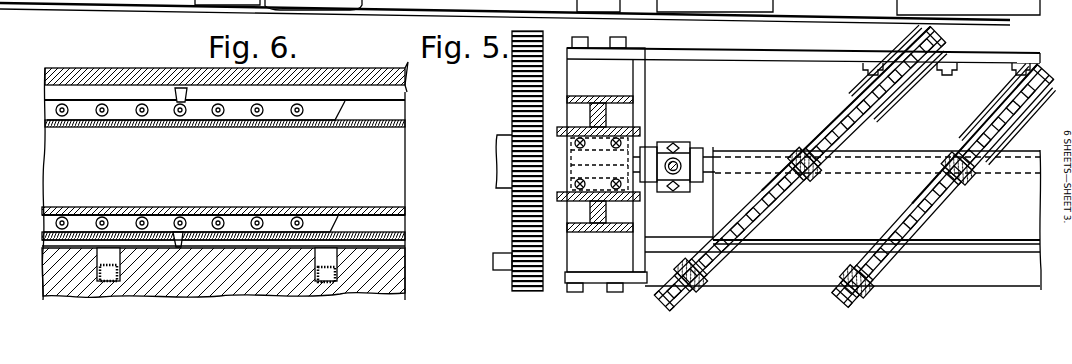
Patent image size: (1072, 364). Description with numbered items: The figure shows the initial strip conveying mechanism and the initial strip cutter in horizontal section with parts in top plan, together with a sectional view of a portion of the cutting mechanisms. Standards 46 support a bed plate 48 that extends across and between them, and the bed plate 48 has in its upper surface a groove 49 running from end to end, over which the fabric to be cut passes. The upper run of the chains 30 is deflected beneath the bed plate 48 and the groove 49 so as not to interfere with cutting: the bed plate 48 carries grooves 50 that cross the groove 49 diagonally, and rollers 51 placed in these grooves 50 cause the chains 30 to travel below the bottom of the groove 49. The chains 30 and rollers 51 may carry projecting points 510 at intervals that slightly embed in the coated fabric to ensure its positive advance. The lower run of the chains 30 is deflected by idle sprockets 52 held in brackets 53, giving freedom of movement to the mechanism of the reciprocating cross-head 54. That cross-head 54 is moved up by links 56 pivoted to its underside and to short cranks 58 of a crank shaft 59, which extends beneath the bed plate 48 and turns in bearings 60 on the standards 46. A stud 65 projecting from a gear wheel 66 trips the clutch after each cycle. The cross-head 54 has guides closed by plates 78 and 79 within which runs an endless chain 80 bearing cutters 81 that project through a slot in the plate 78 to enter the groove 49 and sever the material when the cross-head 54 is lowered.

In FIG. 6, the chains 30 is at (120, 273).
In FIG. 5, the chains 30 is at (850, 120).
In FIG. 5, the standards 46 is at (598, 100).
In FIG. 6, the bed plate 48 is at (405, 290).
In FIG. 5, the bed plate 48 is at (842, 231).
In FIG. 6, the groove 49 is at (405, 230).
In FIG. 5, the groove 49 is at (962, 253).
In FIG. 6, the grooves 50 is at (97, 256).
In FIG. 5, the grooves 50 is at (770, 232).
In FIG. 5, the rollers 51 is at (805, 150).
In FIG. 5, the projecting points 510 is at (812, 178).
In FIG. 5, the idle sprockets 52 is at (877, 107).
In FIG. 5, the brackets 53 is at (883, 62).
In FIG. 6, the cross-head 54 is at (43, 137).
In FIG. 5, the links 56 is at (676, 160).
In FIG. 5, the short cranks 58 is at (648, 147).
In FIG. 5, the crank shaft 59 is at (572, 152).
In FIG. 5, the bearings 60 is at (588, 166).
In FIG. 5, the stud 65 is at (494, 256).
In FIG. 5, the gear wheel 66 is at (512, 117).
In FIG. 6, the plate 78 is at (268, 238).
In FIG. 6, the plate 79 is at (216, 127).
In FIG. 6, the endless chain 80 is at (322, 121).
In FIG. 6, the cutters 81 is at (180, 88).